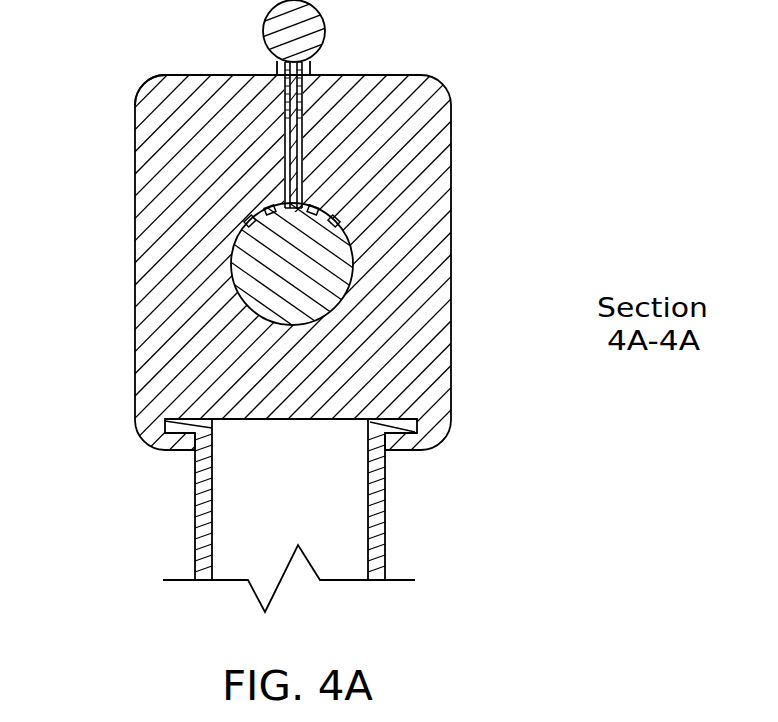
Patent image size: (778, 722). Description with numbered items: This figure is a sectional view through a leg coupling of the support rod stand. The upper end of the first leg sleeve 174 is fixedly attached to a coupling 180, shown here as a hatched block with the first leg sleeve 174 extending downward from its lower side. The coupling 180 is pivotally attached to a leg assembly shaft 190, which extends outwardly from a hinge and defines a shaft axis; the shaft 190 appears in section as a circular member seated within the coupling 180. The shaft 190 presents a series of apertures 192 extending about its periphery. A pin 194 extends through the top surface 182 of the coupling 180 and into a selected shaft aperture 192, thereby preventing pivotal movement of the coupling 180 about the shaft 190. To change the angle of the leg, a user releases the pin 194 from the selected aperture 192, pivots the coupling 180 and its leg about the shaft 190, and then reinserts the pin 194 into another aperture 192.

The first leg sleeve 174 is at (342, 546).
The coupling 180 is at (442, 145).
The top surface 182 is at (162, 75).
The leg assembly shaft 190 is at (242, 280).
The shaft apertures 192 is at (248, 201).
The pin 194 is at (326, 32).